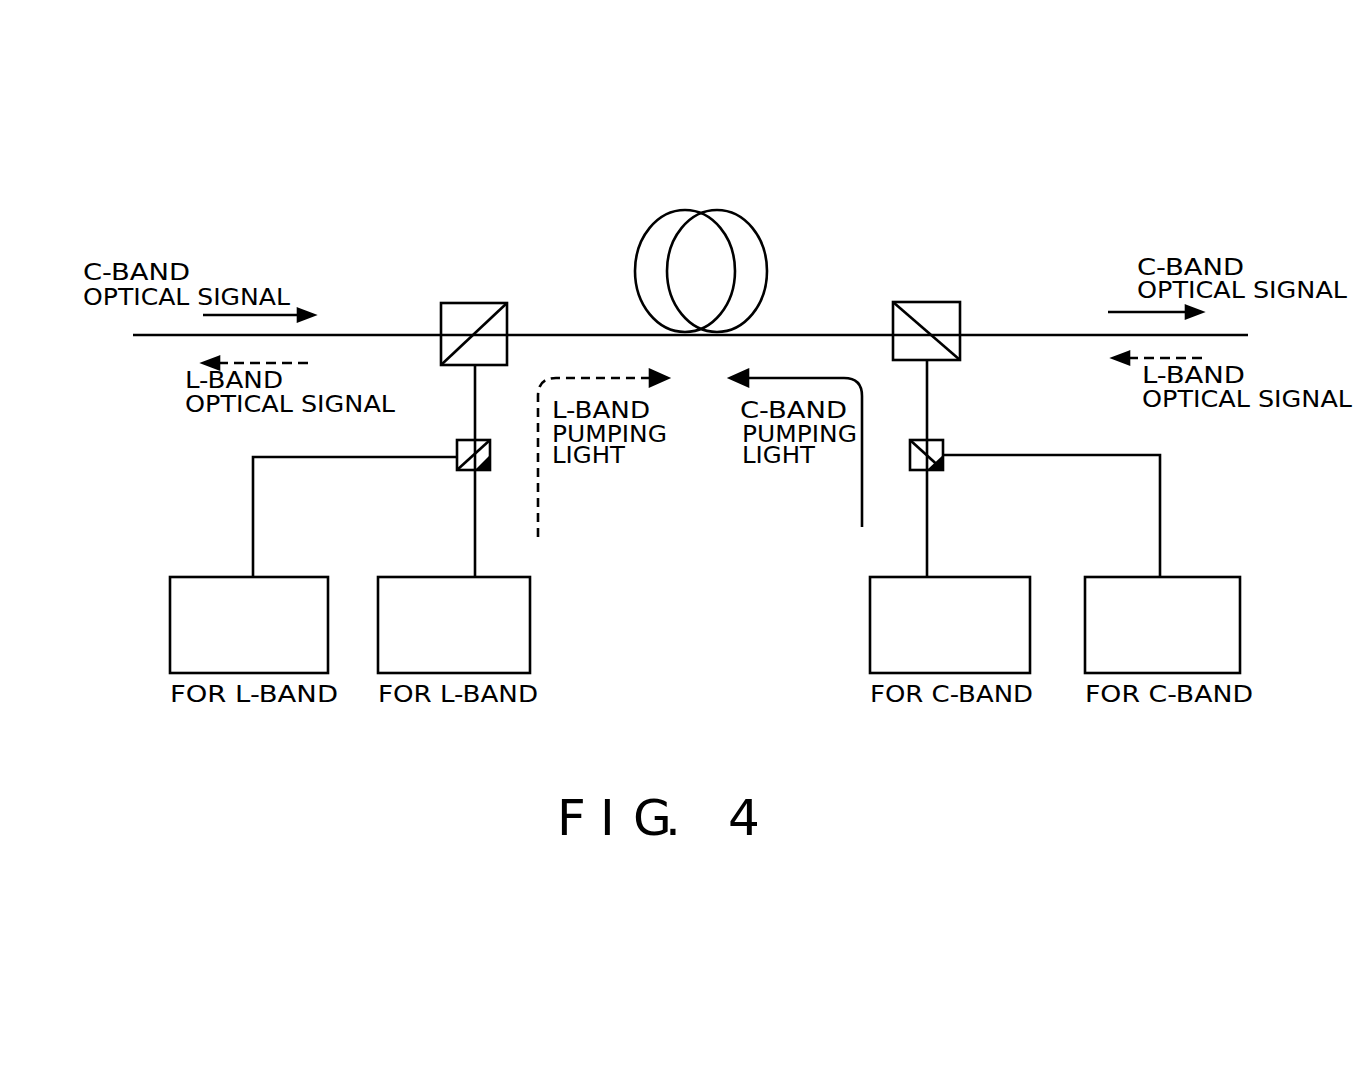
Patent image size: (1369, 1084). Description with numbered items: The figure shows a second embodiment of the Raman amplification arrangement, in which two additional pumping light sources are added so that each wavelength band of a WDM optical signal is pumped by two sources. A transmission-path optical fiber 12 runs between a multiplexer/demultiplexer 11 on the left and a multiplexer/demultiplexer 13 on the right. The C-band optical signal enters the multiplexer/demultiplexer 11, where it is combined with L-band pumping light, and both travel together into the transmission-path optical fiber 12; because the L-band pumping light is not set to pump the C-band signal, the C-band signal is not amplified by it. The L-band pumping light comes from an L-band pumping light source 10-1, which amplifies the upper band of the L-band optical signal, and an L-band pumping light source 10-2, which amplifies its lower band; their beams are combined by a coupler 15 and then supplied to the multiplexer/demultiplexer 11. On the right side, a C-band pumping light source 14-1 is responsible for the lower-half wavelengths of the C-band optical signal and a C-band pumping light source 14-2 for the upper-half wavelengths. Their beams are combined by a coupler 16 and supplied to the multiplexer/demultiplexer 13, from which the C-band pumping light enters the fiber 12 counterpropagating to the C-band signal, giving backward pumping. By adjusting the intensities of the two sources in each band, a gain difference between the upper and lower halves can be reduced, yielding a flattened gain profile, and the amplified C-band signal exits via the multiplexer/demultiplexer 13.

The L-band pumping light source 10-1 is at (170, 607).
The L-band pumping light source 10-2 is at (532, 607).
The multiplexer/demultiplexer 11 is at (507, 312).
The transmission-path optical fiber 12 is at (694, 238).
The multiplexer/demultiplexer 13 is at (893, 310).
The C-band pumping light source 14-1 is at (870, 607).
The C-band pumping light source 14-2 is at (1240, 620).
The coupler 15 is at (483, 470).
The coupler 16 is at (943, 446).